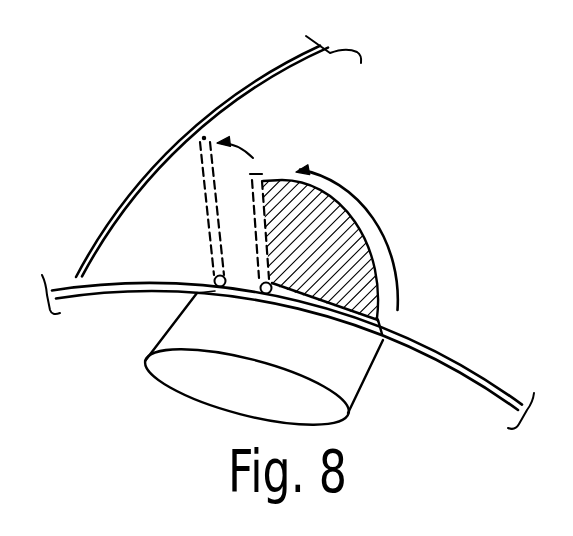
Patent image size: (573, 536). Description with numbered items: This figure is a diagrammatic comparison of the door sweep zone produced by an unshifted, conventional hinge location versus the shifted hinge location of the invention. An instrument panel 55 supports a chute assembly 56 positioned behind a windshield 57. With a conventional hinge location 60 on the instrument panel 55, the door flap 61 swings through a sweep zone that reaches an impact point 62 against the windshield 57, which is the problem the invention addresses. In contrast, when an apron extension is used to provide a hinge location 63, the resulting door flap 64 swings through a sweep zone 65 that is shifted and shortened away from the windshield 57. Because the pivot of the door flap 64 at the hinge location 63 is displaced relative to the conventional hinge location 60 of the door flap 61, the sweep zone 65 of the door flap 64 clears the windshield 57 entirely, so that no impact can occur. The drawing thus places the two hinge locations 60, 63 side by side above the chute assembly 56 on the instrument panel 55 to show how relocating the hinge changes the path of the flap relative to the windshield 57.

The instrument panel 55 is at (441, 353).
The chute assembly 56 is at (345, 367).
The windshield 57 is at (90, 252).
The conventional hinge location 60 is at (219, 288).
The door flap 61 is at (207, 221).
The impact point 62 is at (203, 137).
The hinge location 63 is at (264, 295).
The door flap 64 is at (251, 182).
The sweep zone 65 is at (289, 192).